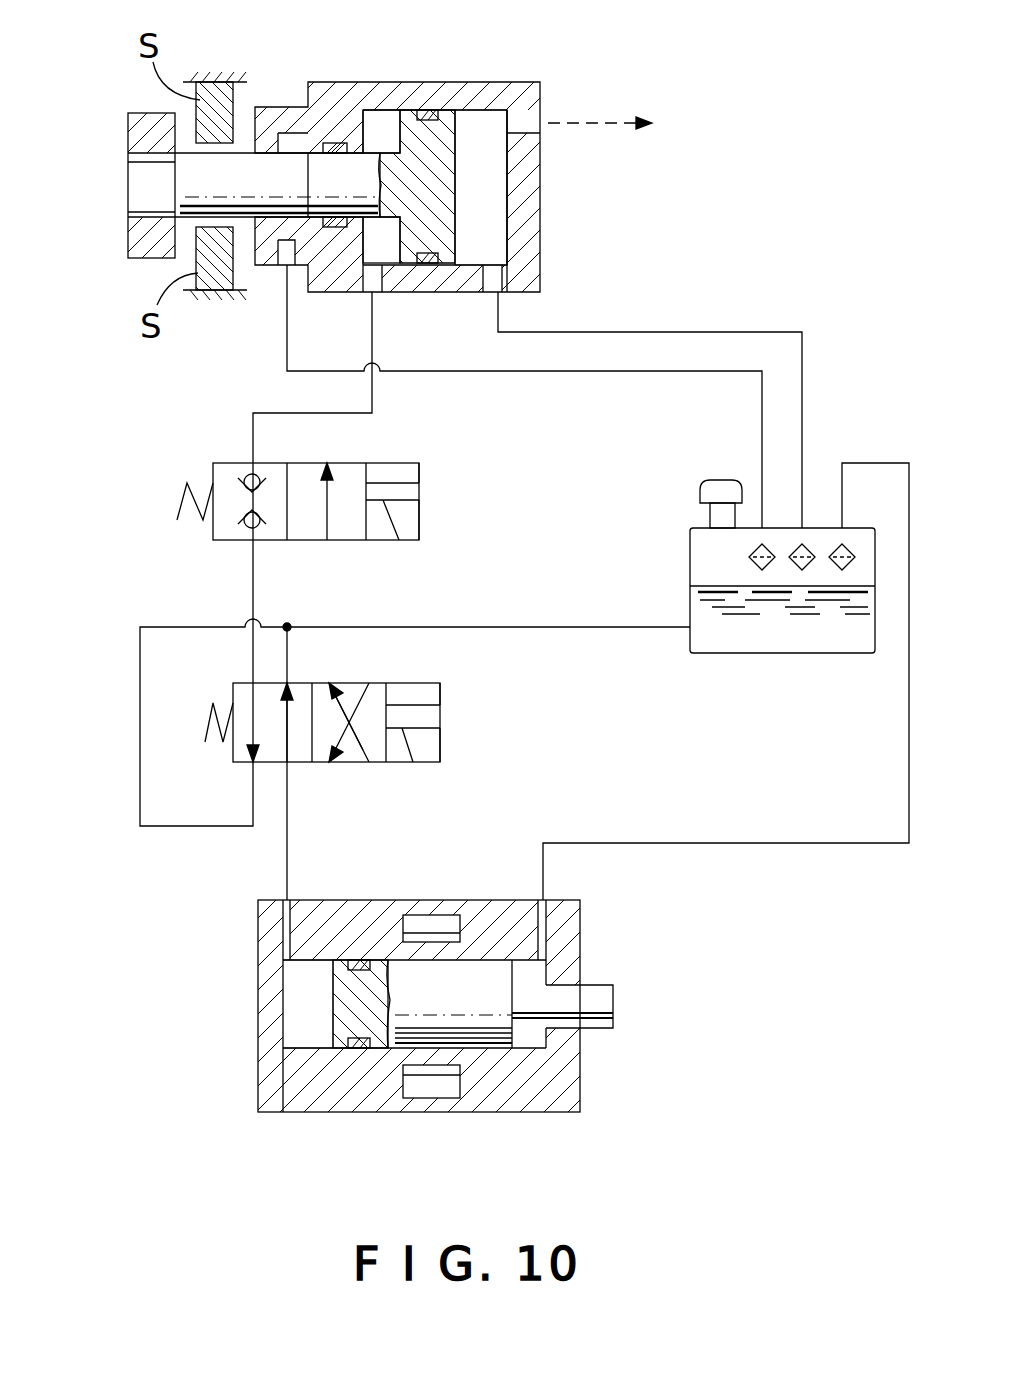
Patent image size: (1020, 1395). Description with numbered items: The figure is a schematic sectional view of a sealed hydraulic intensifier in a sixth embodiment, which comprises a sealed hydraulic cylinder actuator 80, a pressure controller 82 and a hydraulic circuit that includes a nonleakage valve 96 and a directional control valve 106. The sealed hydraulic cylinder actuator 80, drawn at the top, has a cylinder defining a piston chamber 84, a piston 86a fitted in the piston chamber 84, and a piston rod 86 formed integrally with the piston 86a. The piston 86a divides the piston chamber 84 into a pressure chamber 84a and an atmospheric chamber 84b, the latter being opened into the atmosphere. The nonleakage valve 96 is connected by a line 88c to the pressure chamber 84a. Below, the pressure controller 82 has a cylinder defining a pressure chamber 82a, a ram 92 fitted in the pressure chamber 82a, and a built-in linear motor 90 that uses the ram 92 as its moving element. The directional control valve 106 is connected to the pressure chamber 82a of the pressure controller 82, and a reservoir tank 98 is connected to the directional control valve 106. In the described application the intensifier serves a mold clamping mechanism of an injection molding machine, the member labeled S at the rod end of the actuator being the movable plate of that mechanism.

The sealed hydraulic cylinder actuator 80 is at (530, 80).
The pressure controller 82 is at (582, 926).
The pressure chamber 82a is at (303, 1003).
The piston chamber 84 is at (463, 146).
The pressure chamber 84a is at (378, 123).
The atmospheric chamber 84b is at (487, 182).
The piston rod 86 is at (138, 193).
The piston 86a is at (447, 222).
The hydraulic line 88c is at (275, 413).
The built-in linear motor 90 is at (437, 1090).
The ram 92 is at (487, 1050).
The nonleakage valve 96 is at (424, 456).
The reservoir tank 98 is at (780, 655).
The directional control valve 106 is at (428, 685).